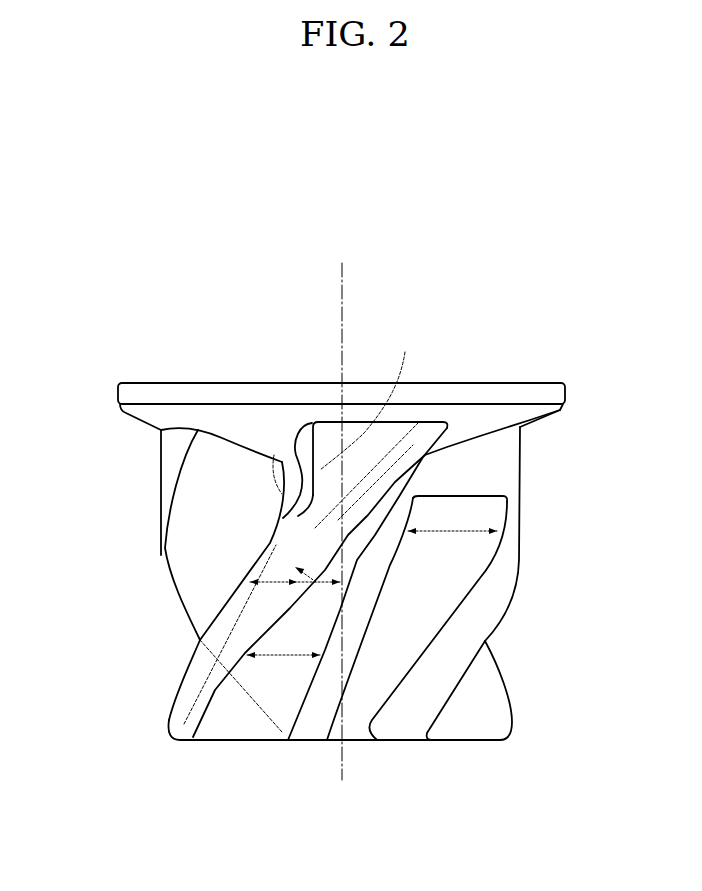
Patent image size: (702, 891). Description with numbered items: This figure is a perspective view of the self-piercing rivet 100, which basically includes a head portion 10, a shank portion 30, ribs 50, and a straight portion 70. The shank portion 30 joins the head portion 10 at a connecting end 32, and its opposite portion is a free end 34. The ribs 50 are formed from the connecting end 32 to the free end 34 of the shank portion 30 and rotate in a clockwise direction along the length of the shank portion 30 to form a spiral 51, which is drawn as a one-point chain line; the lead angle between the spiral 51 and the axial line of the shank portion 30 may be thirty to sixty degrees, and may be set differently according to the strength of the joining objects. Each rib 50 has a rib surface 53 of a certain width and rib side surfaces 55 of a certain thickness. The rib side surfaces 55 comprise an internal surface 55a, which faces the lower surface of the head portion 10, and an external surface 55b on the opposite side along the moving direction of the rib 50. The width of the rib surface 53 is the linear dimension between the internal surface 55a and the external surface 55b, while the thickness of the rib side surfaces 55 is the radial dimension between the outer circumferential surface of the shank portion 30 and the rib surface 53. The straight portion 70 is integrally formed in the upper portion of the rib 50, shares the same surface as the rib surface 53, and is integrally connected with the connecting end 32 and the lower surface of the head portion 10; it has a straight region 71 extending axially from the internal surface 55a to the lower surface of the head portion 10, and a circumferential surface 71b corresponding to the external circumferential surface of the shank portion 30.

The self-piercing rivet 100 is at (265, 182).
The head portion 10 is at (454, 398).
The shank portion 30 is at (352, 621).
The connecting end 32 is at (258, 453).
The free end 34 is at (195, 635).
The ribs 50 is at (220, 589).
The spiral 51 is at (202, 677).
The rib surface 53 is at (273, 557).
The rib side surfaces 55 is at (372, 844).
The internal surface 55a is at (378, 675).
The external surface 55b is at (240, 700).
The straight portion 70 is at (287, 424).
The straight region 71 is at (305, 421).
The circumferential surface 71b is at (369, 396).